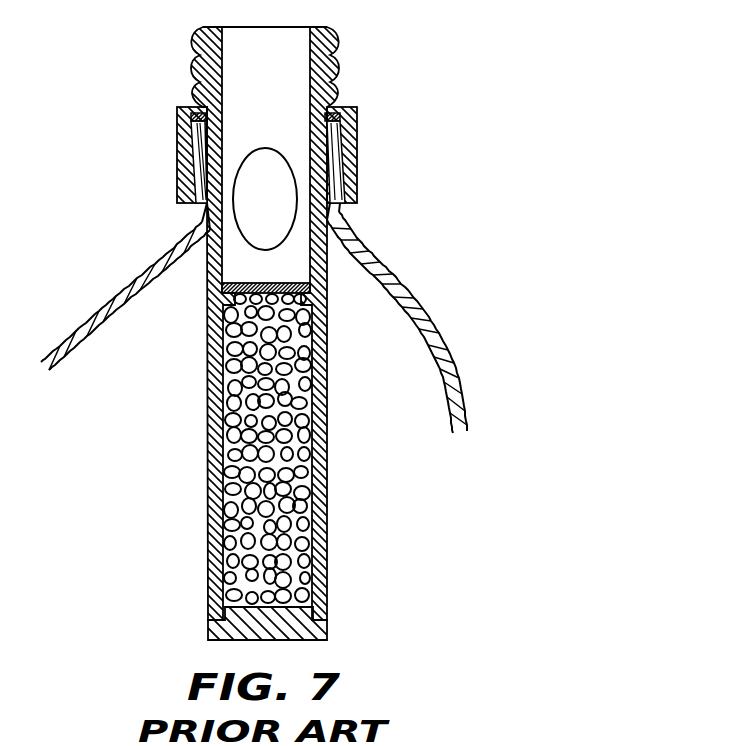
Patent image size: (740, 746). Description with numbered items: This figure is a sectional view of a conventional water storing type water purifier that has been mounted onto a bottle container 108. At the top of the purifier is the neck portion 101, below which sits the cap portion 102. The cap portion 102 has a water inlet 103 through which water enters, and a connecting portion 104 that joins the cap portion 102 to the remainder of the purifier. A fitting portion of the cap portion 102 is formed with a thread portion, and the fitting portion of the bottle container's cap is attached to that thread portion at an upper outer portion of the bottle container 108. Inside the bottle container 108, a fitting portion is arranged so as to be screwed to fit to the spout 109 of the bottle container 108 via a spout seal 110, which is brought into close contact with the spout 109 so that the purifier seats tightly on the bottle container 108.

The neck portion 101 is at (350, 28).
The cap portion 102 is at (357, 160).
The water inlet 103 is at (283, 216).
The connecting portion 104 is at (328, 299).
The bottle container 108 is at (440, 298).
The spout 109 is at (196, 170).
The spout seal 110 is at (357, 117).